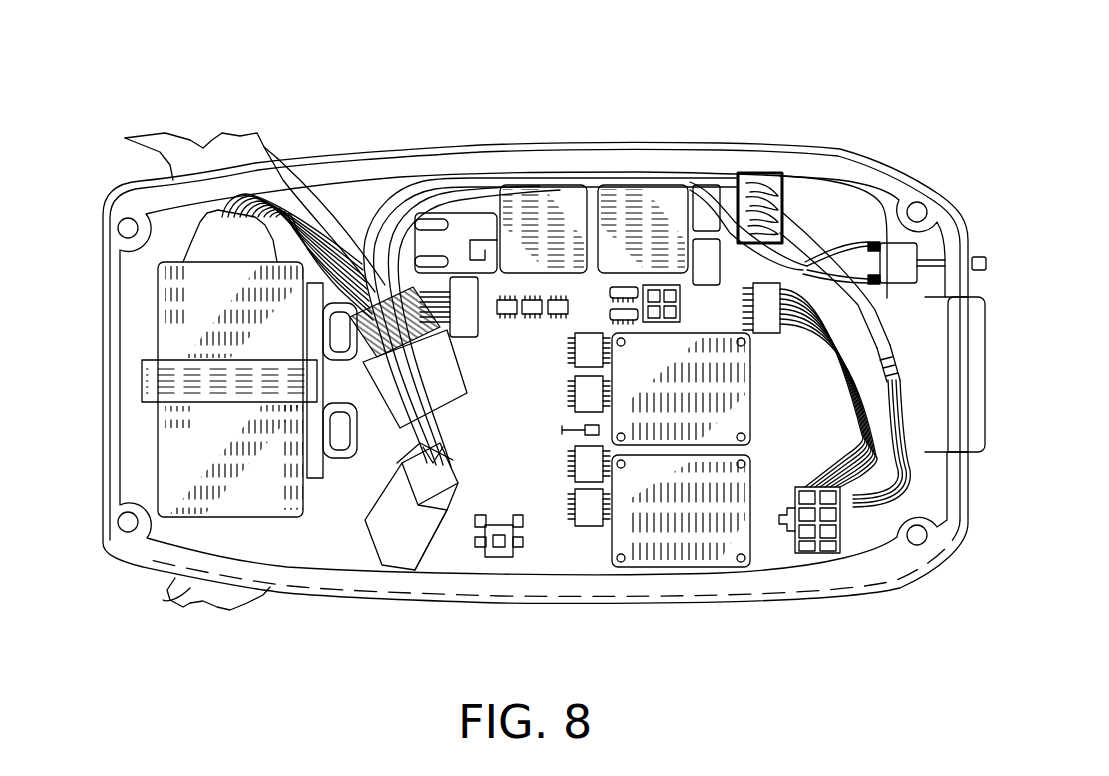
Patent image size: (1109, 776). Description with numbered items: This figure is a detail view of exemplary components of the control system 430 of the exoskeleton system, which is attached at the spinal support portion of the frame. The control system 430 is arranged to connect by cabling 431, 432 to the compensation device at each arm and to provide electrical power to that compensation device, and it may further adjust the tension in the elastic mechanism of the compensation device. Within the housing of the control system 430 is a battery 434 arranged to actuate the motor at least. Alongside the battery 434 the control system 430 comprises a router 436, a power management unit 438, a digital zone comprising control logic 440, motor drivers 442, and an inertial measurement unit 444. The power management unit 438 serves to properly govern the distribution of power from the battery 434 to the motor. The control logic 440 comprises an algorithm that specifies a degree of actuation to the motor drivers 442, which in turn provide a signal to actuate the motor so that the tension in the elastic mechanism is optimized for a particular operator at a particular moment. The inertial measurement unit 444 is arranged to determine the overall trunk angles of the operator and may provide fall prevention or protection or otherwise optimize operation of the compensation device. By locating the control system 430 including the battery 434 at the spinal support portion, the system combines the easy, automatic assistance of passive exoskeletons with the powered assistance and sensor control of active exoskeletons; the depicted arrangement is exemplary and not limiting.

The control system 430 is at (861, 147).
The cabling 431 is at (203, 152).
The cabling 432 is at (165, 600).
The battery 434 is at (273, 460).
The router 436 is at (410, 232).
The power management unit 438 is at (623, 211).
The control logic 440 is at (558, 438).
The motor drivers 442 is at (681, 427).
The inertial measurement unit 444 is at (670, 316).